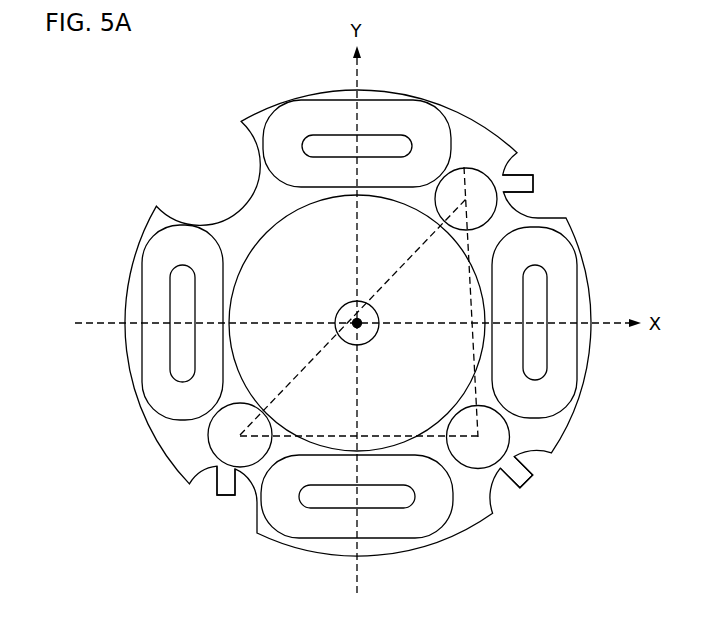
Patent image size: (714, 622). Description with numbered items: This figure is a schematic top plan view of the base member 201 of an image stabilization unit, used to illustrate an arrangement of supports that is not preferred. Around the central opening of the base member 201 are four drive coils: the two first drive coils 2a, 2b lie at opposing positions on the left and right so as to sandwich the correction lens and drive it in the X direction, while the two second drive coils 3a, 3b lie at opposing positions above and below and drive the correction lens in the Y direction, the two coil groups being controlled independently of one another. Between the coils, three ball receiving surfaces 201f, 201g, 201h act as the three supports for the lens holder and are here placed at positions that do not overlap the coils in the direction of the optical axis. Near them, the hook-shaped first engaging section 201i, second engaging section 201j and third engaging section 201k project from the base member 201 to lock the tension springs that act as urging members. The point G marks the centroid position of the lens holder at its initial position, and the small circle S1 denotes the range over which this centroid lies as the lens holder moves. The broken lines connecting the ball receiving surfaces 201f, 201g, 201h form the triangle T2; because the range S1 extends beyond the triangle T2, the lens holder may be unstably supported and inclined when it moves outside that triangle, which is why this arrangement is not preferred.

The base member 201 is at (301, 91).
The first drive coil 2a is at (568, 266).
The first drive coil 2b is at (152, 287).
The second drive coil 3a is at (411, 122).
The second drive coil 3b is at (318, 530).
The ball receiving surface 201f is at (464, 169).
The ball receiving surface 201g is at (207, 431).
The ball receiving surface 201h is at (528, 448).
The first engaging section 201i is at (536, 184).
The second engaging section 201j is at (214, 486).
The third engaging section 201k is at (528, 479).
The centroid position G is at (374, 311).
The range of centroid position S1 is at (375, 334).
The triangle T2 is at (470, 304).